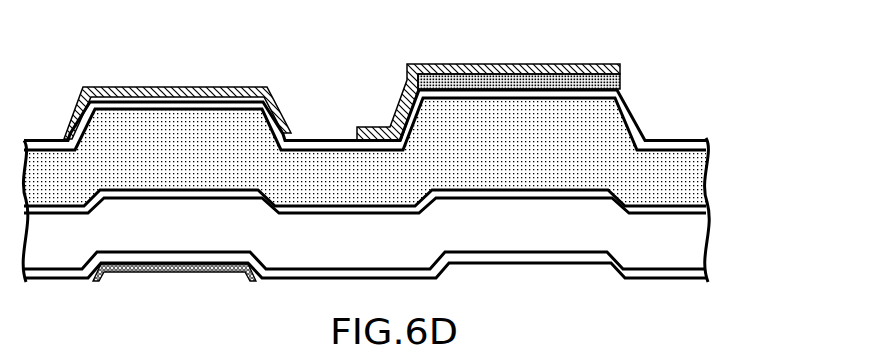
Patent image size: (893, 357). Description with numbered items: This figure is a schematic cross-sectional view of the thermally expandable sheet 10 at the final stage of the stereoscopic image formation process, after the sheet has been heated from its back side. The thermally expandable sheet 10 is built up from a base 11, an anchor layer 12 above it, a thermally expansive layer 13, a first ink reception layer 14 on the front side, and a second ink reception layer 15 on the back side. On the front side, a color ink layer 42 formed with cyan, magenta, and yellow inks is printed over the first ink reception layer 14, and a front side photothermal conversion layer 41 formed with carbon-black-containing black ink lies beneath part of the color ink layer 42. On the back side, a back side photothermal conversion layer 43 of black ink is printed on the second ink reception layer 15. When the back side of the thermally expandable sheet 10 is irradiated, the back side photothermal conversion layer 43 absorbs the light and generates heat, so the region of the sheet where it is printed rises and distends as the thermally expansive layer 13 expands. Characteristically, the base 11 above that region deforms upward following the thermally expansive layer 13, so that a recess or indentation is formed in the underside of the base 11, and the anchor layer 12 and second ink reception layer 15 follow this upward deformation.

The thermally expandable sheet 10 is at (680, 122).
The base 11 is at (693, 247).
The anchor layer 12 is at (693, 208).
The thermally expansive layer 13 is at (689, 177).
The first ink reception layer 14 is at (705, 142).
The second ink reception layer 15 is at (693, 276).
The front side photothermal conversion layer 41 is at (563, 84).
The color ink layer 42 is at (199, 88).
The back side photothermal conversion layer 43 is at (162, 268).